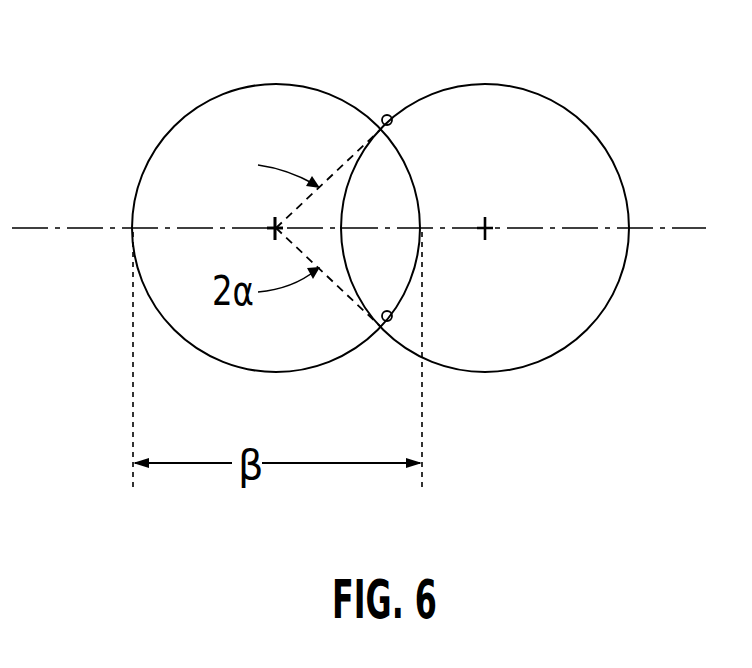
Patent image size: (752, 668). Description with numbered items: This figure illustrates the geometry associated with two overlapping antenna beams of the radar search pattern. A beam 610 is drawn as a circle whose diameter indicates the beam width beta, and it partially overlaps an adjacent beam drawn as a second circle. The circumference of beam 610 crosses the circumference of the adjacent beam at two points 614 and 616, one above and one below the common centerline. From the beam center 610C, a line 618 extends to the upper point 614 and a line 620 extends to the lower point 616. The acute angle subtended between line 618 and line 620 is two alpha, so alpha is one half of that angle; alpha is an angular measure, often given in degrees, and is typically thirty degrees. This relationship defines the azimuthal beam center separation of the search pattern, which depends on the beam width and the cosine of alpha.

The beam 610 is at (170, 130).
The beam center 610C is at (272, 226).
The point 614 is at (392, 121).
The point 616 is at (392, 318).
The line 618 is at (345, 164).
The line 620 is at (347, 294).